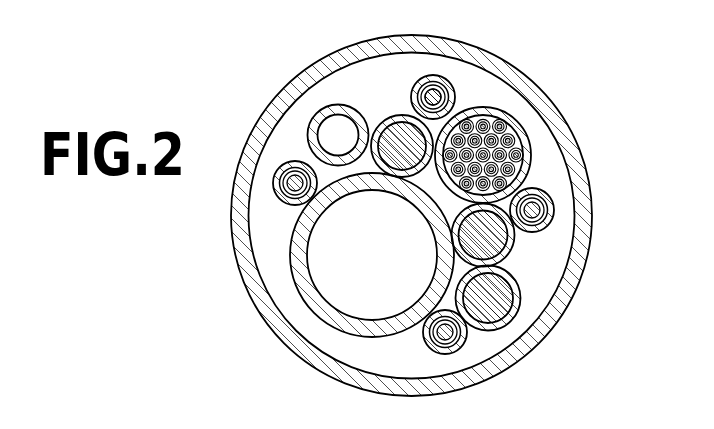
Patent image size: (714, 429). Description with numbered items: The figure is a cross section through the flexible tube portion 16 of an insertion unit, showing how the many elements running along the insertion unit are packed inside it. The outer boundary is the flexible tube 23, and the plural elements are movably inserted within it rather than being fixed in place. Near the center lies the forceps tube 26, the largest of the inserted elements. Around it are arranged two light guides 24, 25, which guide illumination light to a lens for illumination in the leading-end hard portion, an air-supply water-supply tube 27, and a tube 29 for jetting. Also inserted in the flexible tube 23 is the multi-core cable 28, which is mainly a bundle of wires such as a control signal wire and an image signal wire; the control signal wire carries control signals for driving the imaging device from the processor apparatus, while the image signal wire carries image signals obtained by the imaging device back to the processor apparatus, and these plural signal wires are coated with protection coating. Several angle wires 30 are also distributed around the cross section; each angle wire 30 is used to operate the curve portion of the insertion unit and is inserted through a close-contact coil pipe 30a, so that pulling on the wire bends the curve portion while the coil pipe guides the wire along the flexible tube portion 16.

The flexible tube portion 16 is at (508, 61).
The flexible tube 23 is at (240, 269).
The light guide 24 is at (519, 285).
The light guide 25 is at (396, 116).
The forceps tube 26 is at (293, 231).
The air-supply water-supply tube 27 is at (353, 106).
The multi-core cable 28 is at (475, 107).
The tube for jetting 29 is at (514, 244).
The angle wire 30 is at (417, 81).
The close-contact coil pipe 30a is at (447, 76).